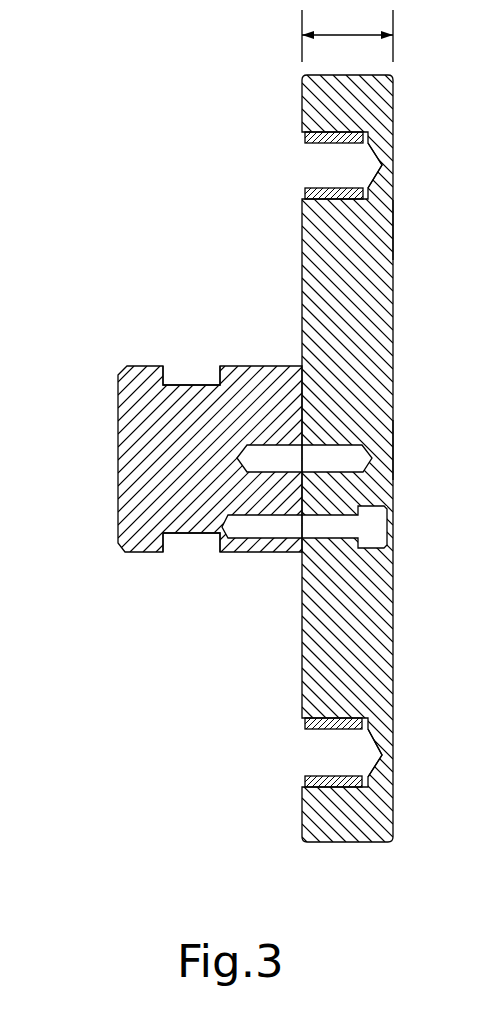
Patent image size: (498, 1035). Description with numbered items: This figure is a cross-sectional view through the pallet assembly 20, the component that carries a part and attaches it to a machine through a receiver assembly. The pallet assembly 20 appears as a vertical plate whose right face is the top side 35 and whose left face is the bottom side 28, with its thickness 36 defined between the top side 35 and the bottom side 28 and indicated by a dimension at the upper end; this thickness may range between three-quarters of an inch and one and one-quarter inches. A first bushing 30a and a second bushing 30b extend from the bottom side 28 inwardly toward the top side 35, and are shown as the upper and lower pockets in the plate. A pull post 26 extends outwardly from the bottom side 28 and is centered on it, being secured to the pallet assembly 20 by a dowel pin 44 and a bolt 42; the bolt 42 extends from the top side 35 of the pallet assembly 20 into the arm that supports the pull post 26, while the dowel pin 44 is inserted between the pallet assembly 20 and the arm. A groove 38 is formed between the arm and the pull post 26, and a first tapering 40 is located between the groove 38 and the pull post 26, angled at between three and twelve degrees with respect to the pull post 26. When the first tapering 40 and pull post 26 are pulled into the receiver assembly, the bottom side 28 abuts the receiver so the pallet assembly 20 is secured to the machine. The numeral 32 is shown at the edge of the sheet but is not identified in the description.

The pallet assembly 20 is at (180, 715).
The pull post 26 is at (118, 458).
The bottom side 28 is at (300, 658).
The first bushing 30a is at (315, 750).
The second bushing 30b is at (345, 165).
The plate surface 32 is at (445, 450).
The top side 35 is at (390, 227).
The thickness 36 is at (347, 31).
The groove 38 is at (196, 377).
The first tapering 40 is at (168, 552).
The bolt 42 is at (390, 550).
The dowel pin 44 is at (330, 445).